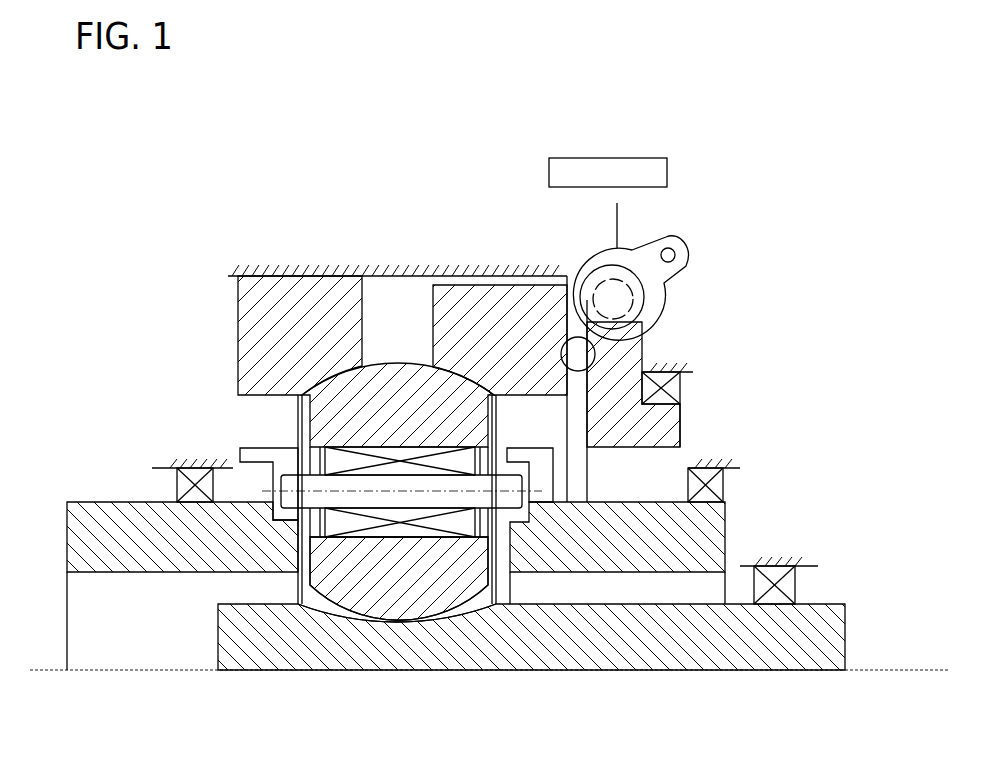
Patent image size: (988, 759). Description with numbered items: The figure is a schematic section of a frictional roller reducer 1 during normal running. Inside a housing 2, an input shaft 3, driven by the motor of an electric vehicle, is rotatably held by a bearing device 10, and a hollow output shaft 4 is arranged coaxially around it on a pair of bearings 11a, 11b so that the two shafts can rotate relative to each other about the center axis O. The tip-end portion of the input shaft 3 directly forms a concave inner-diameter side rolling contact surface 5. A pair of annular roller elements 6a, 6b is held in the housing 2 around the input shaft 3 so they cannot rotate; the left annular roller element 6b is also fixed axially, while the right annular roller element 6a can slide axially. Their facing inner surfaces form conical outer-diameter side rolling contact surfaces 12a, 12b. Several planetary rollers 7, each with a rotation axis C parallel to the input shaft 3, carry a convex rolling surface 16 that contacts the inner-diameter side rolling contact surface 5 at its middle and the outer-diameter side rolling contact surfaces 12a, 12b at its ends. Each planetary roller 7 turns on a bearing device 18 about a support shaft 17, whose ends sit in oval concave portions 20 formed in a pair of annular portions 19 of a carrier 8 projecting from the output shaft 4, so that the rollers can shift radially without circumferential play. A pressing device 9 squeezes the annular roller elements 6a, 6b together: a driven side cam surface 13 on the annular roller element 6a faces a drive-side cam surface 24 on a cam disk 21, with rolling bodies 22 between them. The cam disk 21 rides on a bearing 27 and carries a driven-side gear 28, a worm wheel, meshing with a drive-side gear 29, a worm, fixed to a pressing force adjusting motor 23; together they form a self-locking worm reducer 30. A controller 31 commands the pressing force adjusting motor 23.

The frictional roller reducer 1 is at (738, 269).
The housing 2 is at (397, 291).
The input shaft 3 is at (676, 642).
The output shaft 4 is at (133, 558).
The inner-diameter side rolling contact surface 5 is at (405, 582).
The annular roller element 6a is at (507, 292).
The annular roller element 6b is at (268, 292).
The planetary roller 7 is at (472, 600).
The carrier 8 is at (262, 448).
The pressing device 9 is at (660, 343).
The bearing device 10 is at (796, 583).
The bearing 11a is at (724, 486).
The bearing 11b is at (178, 487).
The outer-diameter side rolling contact surface 12a is at (455, 372).
The outer-diameter side rolling contact surface 12b is at (362, 365).
The driven side cam surface 13 is at (547, 297).
The rolling surface 16 is at (398, 362).
The support shaft 17 is at (490, 590).
The bearing device 18 is at (383, 540).
The annular portion 19 is at (545, 505).
The concave portion 20 is at (177, 503).
The cam disk 21 is at (683, 374).
The rolling body 22 is at (581, 300).
The pressing force adjusting motor 23 is at (663, 264).
The drive-side cam surface 24 is at (597, 354).
The bearing 27 is at (684, 392).
The driven-side gear 28 is at (645, 325).
The drive-side gear 29 is at (652, 272).
The worm reducer 30 is at (640, 292).
The controller 31 is at (669, 183).
The rotation axis C is at (298, 640).
The center axis O is at (885, 672).